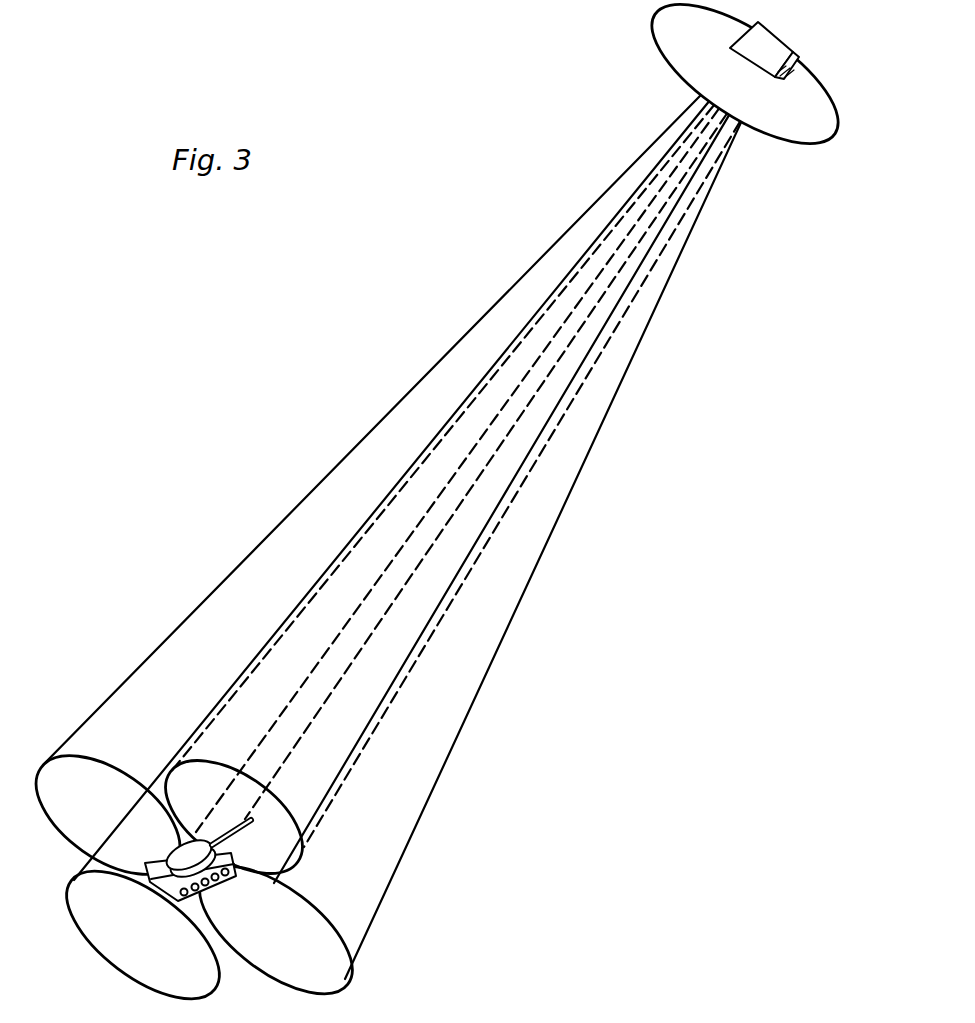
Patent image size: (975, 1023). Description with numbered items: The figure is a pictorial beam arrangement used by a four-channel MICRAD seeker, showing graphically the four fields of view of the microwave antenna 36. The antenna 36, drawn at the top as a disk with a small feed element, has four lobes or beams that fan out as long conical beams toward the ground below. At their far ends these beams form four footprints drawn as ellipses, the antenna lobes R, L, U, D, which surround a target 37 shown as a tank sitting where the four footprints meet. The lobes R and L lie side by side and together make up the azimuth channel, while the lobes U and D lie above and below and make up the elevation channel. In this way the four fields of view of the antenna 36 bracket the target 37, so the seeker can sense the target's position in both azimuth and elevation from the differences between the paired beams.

The microwave antenna 36 is at (825, 112).
The target 37 is at (379, 559).
The antenna lobe U is at (108, 815).
The antenna lobe R is at (234, 817).
The antenna lobe L is at (143, 934).
The antenna lobe D is at (300, 881).